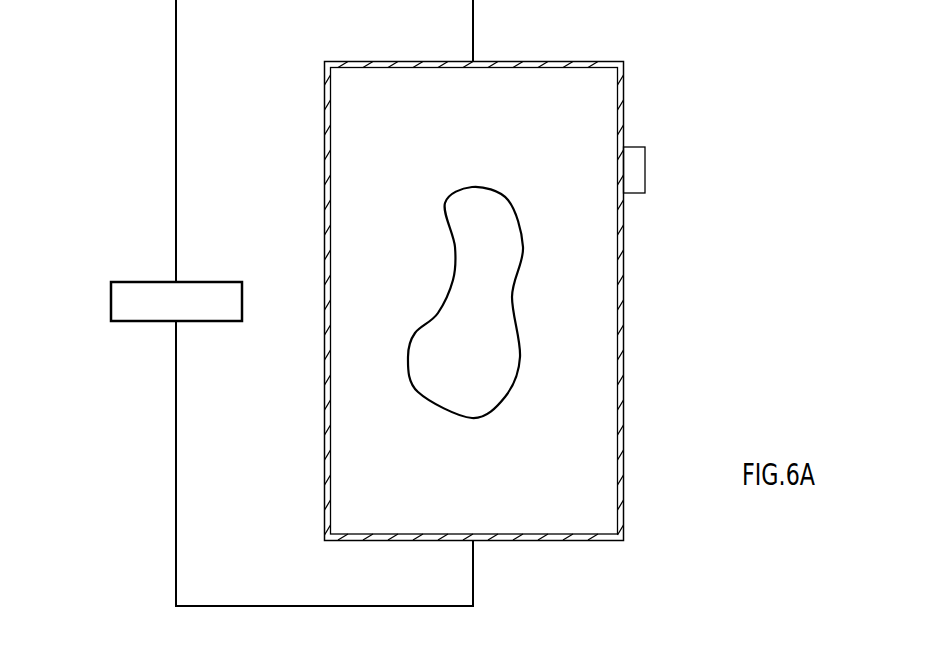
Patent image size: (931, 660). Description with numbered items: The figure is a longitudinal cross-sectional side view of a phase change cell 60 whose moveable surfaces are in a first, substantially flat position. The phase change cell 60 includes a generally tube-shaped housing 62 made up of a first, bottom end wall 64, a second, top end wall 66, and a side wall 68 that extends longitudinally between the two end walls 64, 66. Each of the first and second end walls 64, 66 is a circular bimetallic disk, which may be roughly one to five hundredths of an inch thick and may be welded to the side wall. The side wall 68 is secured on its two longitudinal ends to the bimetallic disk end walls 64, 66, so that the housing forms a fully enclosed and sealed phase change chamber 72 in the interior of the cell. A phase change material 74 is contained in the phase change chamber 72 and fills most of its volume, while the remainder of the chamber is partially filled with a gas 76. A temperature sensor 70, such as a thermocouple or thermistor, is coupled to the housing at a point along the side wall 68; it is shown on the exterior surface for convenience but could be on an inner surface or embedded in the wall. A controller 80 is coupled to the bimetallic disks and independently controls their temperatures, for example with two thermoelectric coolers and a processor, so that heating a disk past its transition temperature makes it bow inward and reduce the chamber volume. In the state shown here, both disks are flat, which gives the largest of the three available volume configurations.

The phase change cell 60 is at (738, 81).
The housing 62 is at (324, 143).
The first end wall 64 is at (603, 541).
The second end wall 66 is at (535, 62).
The side wall 68 is at (623, 373).
The temperature sensor 70 is at (632, 177).
The phase change chamber 72 is at (445, 484).
The phase change material 74 is at (585, 455).
The gas 76 is at (476, 370).
The controller 80 is at (111, 301).